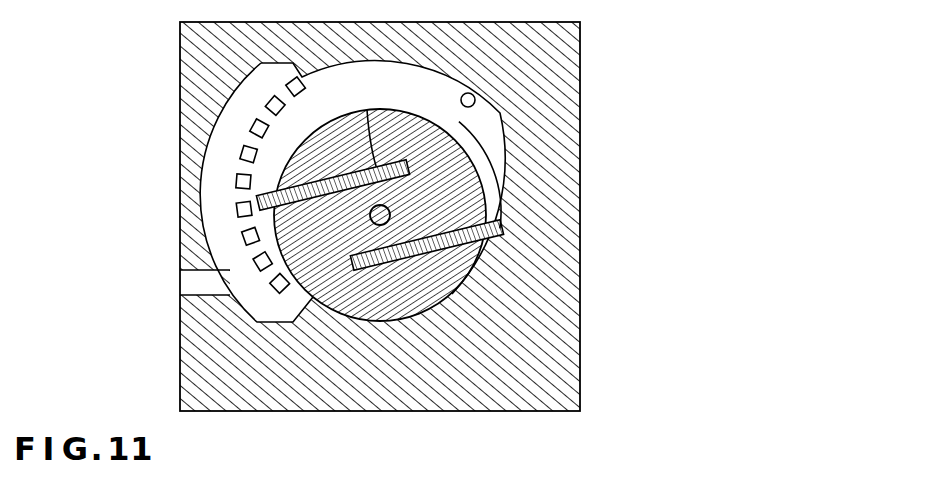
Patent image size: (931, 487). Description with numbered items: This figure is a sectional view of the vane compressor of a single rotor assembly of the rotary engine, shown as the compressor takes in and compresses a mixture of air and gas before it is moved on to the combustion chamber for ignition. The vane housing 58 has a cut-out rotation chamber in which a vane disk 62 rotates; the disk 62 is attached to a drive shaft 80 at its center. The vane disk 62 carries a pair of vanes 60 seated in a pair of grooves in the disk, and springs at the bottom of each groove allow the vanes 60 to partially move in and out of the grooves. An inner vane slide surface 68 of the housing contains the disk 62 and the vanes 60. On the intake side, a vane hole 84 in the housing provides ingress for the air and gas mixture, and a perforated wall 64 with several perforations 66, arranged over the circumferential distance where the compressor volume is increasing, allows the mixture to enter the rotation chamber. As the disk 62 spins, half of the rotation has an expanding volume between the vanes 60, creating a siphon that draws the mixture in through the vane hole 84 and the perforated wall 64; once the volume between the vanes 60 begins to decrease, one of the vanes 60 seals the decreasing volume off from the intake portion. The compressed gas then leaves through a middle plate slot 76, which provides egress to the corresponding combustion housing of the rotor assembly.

The vane housing 58 is at (580, 78).
The vanes 60 is at (355, 110).
The vane disk 62 is at (372, 108).
The perforated wall 64 is at (240, 176).
The perforations 66 is at (262, 262).
The inner vane slide surface 68 is at (477, 106).
The middle plate slot 76 is at (490, 140).
The drive shaft 80 is at (505, 195).
The vane hole 84 is at (187, 272).